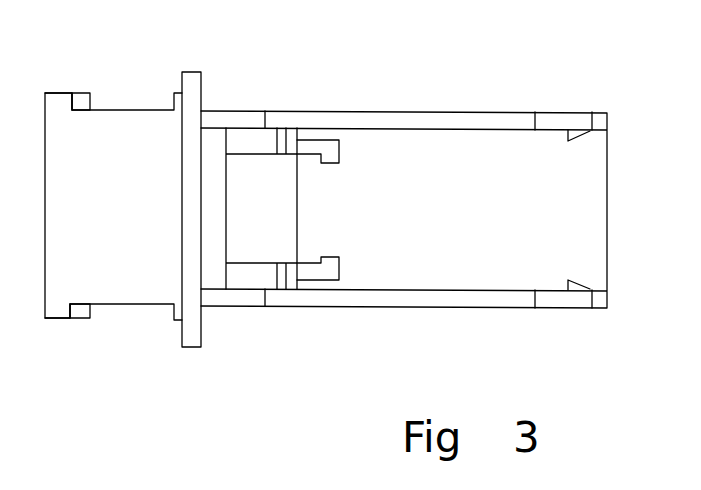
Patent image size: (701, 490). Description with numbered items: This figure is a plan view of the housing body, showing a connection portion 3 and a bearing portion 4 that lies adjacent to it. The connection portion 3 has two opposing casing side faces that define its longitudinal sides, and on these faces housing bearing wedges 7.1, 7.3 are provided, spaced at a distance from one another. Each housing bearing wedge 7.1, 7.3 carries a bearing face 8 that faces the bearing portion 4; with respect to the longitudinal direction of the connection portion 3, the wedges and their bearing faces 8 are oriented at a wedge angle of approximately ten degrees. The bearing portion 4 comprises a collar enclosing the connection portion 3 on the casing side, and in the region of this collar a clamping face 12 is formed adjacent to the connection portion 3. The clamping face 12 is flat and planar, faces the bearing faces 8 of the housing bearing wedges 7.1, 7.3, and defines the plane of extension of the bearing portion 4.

The connection portion 3 is at (137, 385).
The bearing portion 4 is at (216, 42).
The housing bearing wedge 7.1 is at (55, 310).
The housing bearing wedge 7.3 is at (63, 100).
The bearing face 8 is at (82, 102).
The clamping face 12 is at (168, 200).